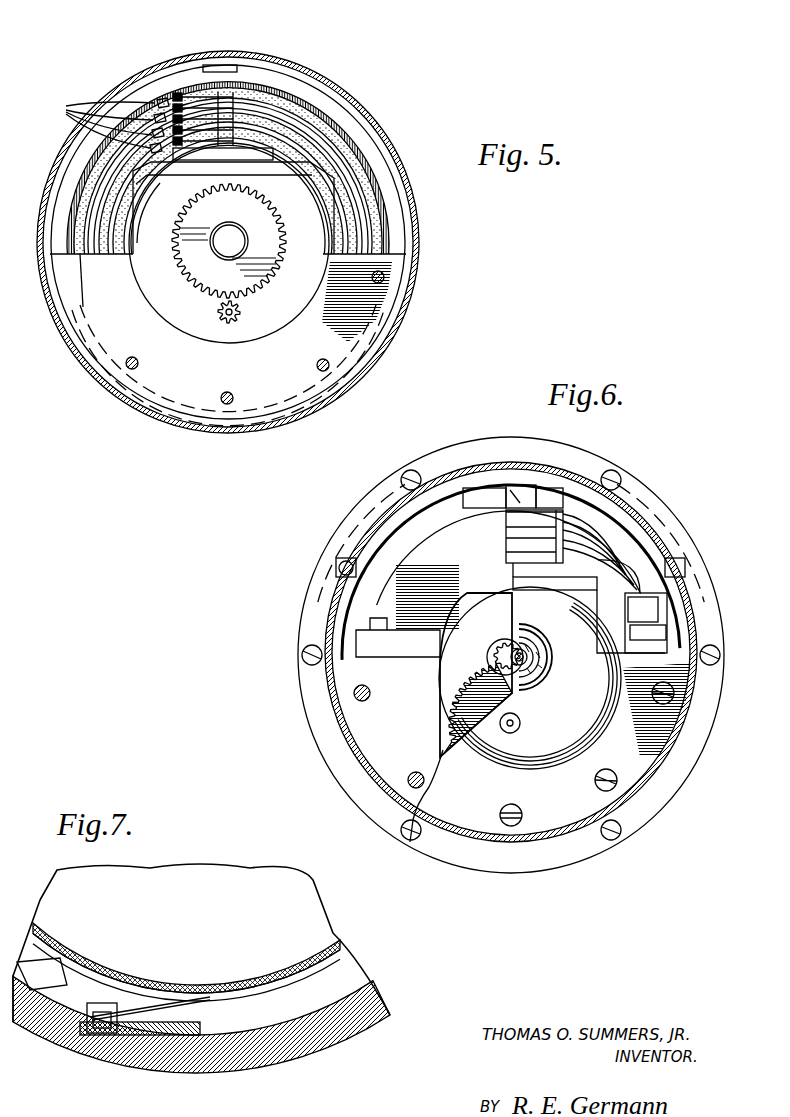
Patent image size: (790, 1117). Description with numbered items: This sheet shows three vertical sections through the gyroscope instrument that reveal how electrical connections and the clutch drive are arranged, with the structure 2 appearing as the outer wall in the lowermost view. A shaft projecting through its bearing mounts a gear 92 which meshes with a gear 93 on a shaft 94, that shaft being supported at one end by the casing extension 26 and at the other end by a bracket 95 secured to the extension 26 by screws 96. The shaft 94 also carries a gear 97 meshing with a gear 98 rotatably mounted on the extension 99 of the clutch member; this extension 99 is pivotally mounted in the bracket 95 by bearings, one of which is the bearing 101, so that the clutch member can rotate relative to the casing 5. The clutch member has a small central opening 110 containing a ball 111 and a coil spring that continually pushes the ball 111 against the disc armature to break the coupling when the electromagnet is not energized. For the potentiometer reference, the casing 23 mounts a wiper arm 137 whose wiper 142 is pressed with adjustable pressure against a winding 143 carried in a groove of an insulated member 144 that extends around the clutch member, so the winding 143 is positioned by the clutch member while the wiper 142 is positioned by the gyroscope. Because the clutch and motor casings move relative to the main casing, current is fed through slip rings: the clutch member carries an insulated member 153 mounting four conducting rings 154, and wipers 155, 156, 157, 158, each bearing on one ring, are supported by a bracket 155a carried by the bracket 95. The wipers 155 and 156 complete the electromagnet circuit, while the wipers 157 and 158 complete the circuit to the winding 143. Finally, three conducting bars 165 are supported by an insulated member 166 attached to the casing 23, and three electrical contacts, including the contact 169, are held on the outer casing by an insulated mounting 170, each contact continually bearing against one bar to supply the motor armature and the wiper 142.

In FIG. 7, the housing wall 2 is at (308, 1043).
In FIG. 5, the casing 5 is at (412, 307).
In FIG. 6, the casing 5 is at (540, 838).
In FIG. 7, the casing 23 is at (143, 978).
In FIG. 6, the casing extension 26 is at (370, 756).
In FIG. 6, the gear 92 is at (500, 651).
In FIG. 6, the gear 93 is at (472, 700).
In FIG. 5, the shaft 94 is at (217, 312).
In FIG. 6, the shaft 94 is at (520, 723).
In FIG. 5, the bracket 95 is at (312, 398).
In FIG. 6, the bracket 95 is at (455, 840).
In FIG. 5, the screws 96 is at (385, 276).
In FIG. 6, the screws 96 is at (595, 783).
In FIG. 5, the gear 97 is at (243, 312).
In FIG. 5, the gear 98 is at (272, 270).
In FIG. 5, the extension 99 is at (240, 232).
In FIG. 6, the extension 99 is at (528, 651).
In FIG. 6, the bearing 101 is at (534, 659).
In FIG. 6, the central opening 110 is at (528, 645).
In FIG. 6, the ball 111 is at (534, 668).
In FIG. 5, the wiper arm 137 is at (212, 65).
In FIG. 6, the wiper arm 137 is at (531, 493).
In FIG. 5, the wiper 142 is at (238, 70).
In FIG. 6, the wiper 142 is at (506, 498).
In FIG. 5, the winding 143 is at (352, 131).
In FIG. 5, the insulated member 144 is at (332, 118).
In FIG. 5, the insulated member 153 is at (352, 182).
In FIG. 5, the conducting rings 154 is at (103, 125).
In FIG. 5, the wiper 155 is at (184, 97).
In FIG. 6, the wiper 155 is at (506, 512).
In FIG. 5, the bracket 155a is at (232, 160).
In FIG. 6, the bracket 155a is at (513, 573).
In FIG. 5, the wiper 156 is at (184, 108).
In FIG. 6, the wiper 156 is at (506, 527).
In FIG. 5, the wiper 157 is at (184, 119).
In FIG. 6, the wiper 157 is at (506, 538).
In FIG. 5, the wiper 158 is at (184, 130).
In FIG. 6, the wiper 158 is at (506, 552).
In FIG. 7, the conducting bars 165 is at (262, 993).
In FIG. 7, the insulated member 166 is at (341, 950).
In FIG. 7, the electrical contact 169 is at (180, 1003).
In FIG. 7, the insulated mounting 170 is at (200, 1028).